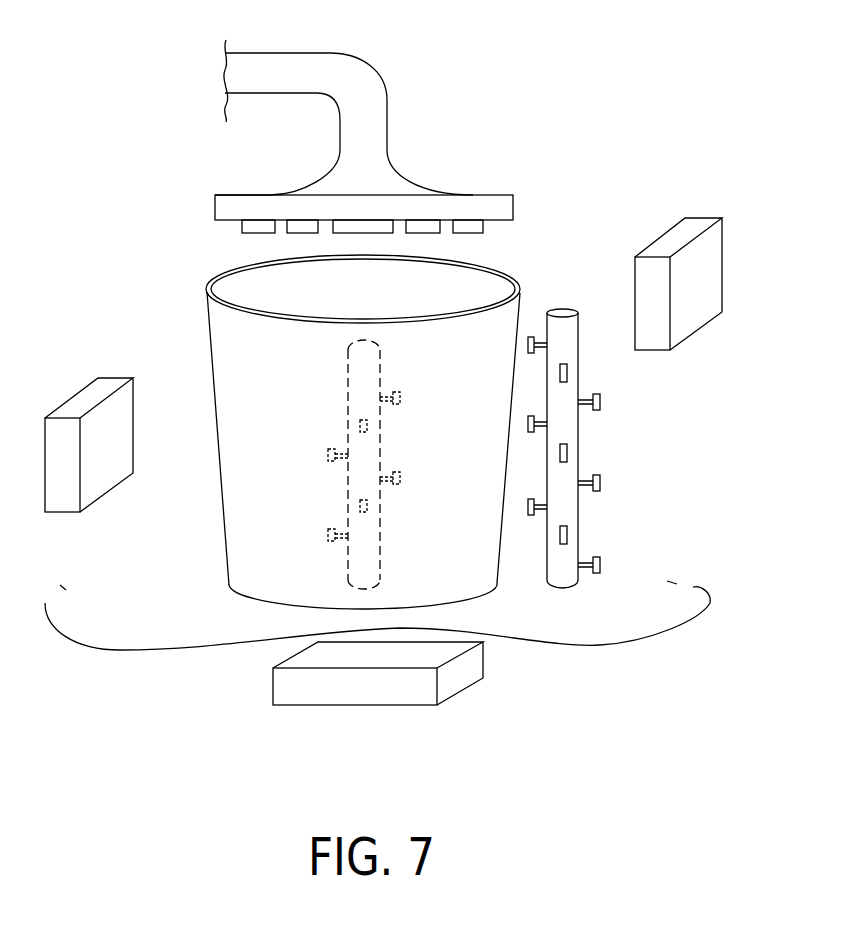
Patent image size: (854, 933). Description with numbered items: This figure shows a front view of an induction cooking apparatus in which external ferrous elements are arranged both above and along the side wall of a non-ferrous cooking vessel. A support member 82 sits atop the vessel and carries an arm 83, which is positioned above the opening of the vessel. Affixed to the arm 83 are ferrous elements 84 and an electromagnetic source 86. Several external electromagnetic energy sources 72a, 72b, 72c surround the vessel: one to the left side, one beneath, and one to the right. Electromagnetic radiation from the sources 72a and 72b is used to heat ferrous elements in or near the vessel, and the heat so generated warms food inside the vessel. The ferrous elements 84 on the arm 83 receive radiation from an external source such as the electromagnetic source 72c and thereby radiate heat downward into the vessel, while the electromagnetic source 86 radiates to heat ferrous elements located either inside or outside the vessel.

The support member 82 is at (280, 63).
The arm 83 is at (453, 202).
The ferrous elements 84 is at (473, 233).
The electromagnetic source 86 is at (358, 234).
The electromagnetic energy source 72a is at (110, 465).
The electromagnetic energy source 72b is at (342, 683).
The electromagnetic source 72c is at (698, 305).